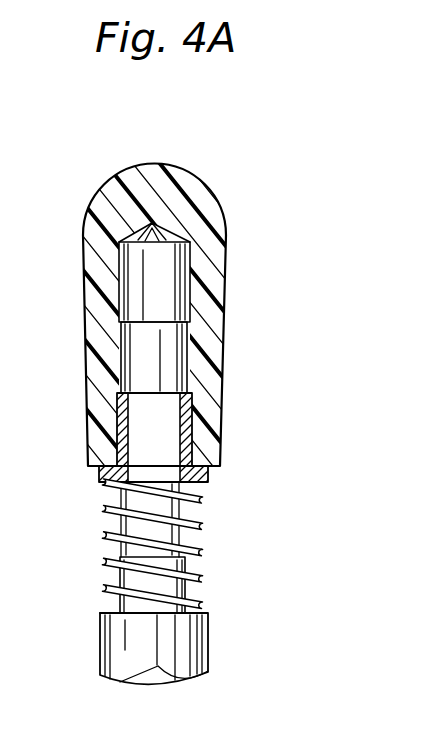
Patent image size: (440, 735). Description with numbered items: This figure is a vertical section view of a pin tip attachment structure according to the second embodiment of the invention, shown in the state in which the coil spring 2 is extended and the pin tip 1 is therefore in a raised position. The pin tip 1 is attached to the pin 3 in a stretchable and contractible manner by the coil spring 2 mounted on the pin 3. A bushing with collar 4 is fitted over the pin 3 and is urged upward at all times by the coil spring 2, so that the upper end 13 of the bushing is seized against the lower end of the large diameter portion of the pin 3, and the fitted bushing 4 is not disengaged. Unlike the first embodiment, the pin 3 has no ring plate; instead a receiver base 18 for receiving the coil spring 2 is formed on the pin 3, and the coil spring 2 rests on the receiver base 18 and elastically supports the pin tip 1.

The pin tip 1 is at (208, 212).
The coil spring 2 is at (198, 525).
The pin 3 is at (187, 637).
The bushing with collar 4 is at (192, 406).
The upper end of the bushing 13 is at (103, 374).
The receiver base 18 is at (107, 612).